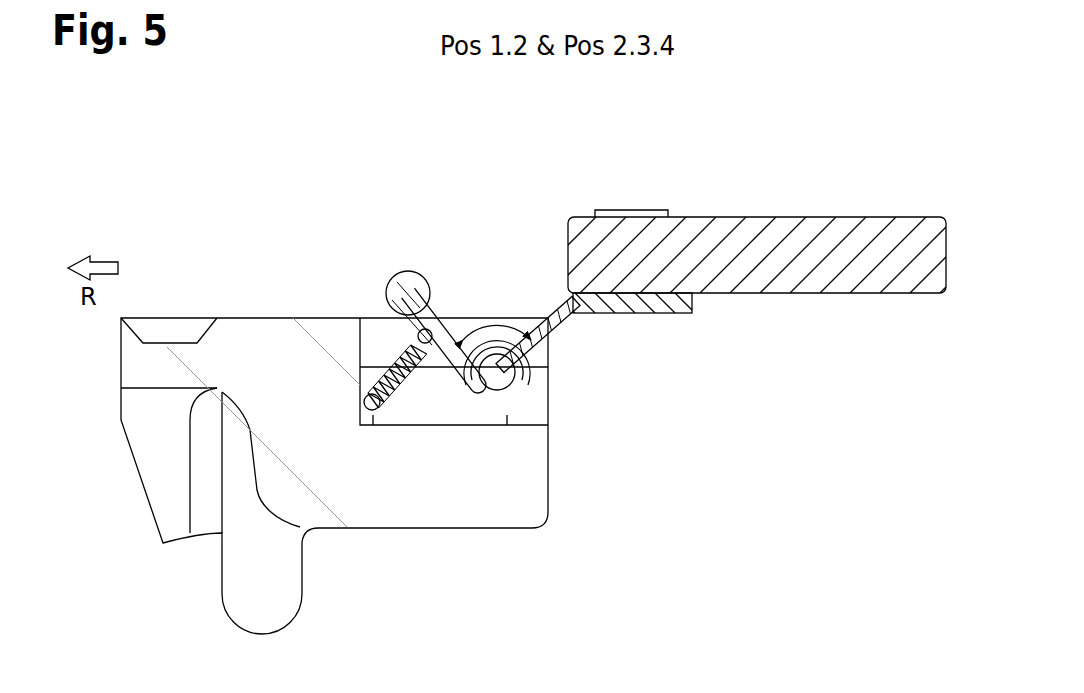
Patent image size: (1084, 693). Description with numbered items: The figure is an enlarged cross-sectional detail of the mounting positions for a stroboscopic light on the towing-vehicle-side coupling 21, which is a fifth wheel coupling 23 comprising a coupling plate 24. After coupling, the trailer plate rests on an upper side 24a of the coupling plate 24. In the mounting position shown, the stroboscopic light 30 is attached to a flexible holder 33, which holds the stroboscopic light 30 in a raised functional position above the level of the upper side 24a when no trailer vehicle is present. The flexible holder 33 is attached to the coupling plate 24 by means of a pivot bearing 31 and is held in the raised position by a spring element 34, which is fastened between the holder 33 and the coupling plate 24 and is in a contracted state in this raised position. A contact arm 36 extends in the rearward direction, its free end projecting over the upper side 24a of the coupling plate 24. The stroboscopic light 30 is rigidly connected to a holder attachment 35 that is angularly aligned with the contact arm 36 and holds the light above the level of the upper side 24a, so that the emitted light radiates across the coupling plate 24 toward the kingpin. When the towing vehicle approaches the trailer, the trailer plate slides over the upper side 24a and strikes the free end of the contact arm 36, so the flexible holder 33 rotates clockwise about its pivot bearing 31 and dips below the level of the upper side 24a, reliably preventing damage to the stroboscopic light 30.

The coupling 21 is at (319, 371).
The fifth wheel coupling 23 is at (334, 406).
The coupling plate 24 is at (334, 406).
The upper side 24a is at (215, 318).
The stroboscopic light 30 is at (775, 217).
The pivot bearing 31 is at (510, 372).
The flexible holder 33 is at (650, 313).
The spring element 34 is at (370, 318).
The holder attachment 35 is at (622, 210).
The contact arm 36 is at (428, 289).